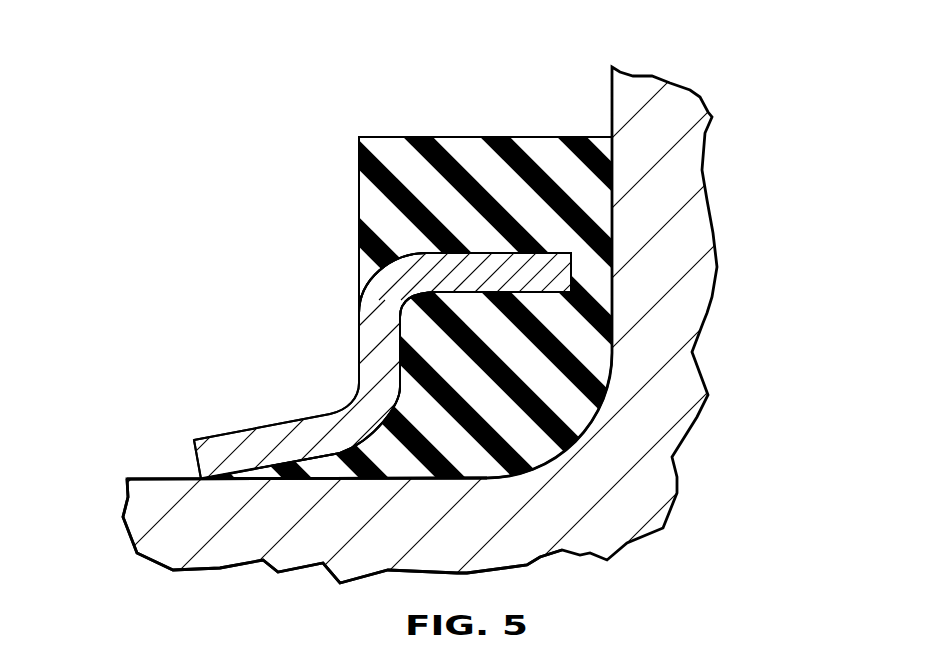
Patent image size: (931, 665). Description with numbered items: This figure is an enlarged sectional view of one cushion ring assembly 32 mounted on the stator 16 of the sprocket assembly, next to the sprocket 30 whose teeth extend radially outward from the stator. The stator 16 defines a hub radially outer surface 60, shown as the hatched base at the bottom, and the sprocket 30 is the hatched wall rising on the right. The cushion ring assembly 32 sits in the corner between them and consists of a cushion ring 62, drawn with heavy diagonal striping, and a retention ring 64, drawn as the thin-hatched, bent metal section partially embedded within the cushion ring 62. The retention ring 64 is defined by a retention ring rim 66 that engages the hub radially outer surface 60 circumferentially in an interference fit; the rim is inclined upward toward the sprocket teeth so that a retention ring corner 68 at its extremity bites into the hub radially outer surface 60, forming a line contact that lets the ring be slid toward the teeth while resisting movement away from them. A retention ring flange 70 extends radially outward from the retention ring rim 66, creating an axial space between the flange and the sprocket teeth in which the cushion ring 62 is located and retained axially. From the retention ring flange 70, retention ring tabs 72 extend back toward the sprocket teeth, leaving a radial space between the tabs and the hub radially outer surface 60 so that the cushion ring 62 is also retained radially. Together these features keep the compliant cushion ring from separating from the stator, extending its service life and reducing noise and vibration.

The stator 16 is at (217, 5).
The sprocket 30 is at (675, 115).
The forward cushion ring assembly 32 is at (465, 332).
The hub radially outer surface 60 is at (142, 479).
The cushion ring 62 is at (463, 150).
The retention ring 64 is at (284, 414).
The retention ring rim 66 is at (255, 446).
The retention ring corner 68 is at (200, 479).
The retention ring flange 70 is at (360, 345).
The retention ring tabs 72 is at (540, 268).